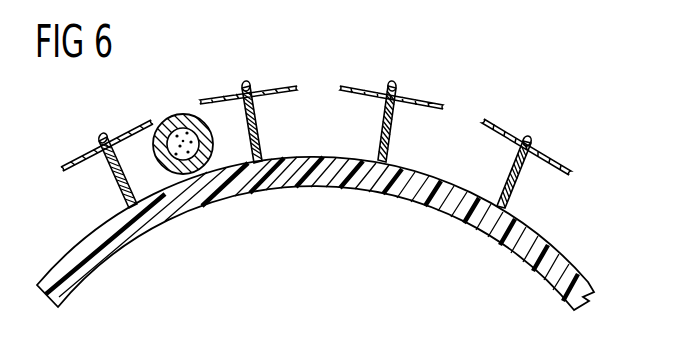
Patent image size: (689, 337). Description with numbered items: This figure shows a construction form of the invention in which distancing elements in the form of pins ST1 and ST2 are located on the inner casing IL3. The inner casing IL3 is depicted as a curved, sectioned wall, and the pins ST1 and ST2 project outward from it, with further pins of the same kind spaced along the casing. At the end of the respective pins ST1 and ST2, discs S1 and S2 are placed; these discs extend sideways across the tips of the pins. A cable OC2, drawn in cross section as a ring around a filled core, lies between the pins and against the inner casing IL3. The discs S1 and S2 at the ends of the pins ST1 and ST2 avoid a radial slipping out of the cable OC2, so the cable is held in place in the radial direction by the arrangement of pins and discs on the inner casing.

The disc S1 is at (72, 163).
The disc S2 is at (283, 84).
The pin ST1 is at (113, 177).
The pin ST2 is at (264, 128).
The cable OC2 is at (177, 104).
The inner casing IL3 is at (113, 246).